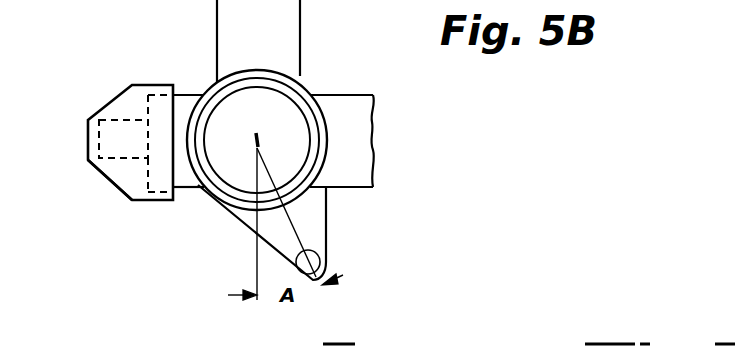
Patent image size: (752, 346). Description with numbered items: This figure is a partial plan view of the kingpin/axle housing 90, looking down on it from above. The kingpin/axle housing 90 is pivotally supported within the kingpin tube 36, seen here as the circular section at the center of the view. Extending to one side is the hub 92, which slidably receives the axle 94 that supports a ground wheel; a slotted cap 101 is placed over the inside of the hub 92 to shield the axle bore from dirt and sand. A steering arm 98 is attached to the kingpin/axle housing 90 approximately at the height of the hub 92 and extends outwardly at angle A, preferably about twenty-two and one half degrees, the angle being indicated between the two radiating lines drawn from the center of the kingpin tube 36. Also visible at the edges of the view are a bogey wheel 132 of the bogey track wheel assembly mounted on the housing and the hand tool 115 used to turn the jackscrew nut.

The bogey wheels 132 is at (287, 15).
The kingpin tube 36 is at (212, 88).
The kingpin/axle housing 90 is at (272, 140).
The axle 94 is at (101, 106).
The slotted cap 101 is at (112, 167).
The hub 92 is at (185, 192).
The steering arm 98 is at (317, 220).
The hand tool 115 is at (144, 345).